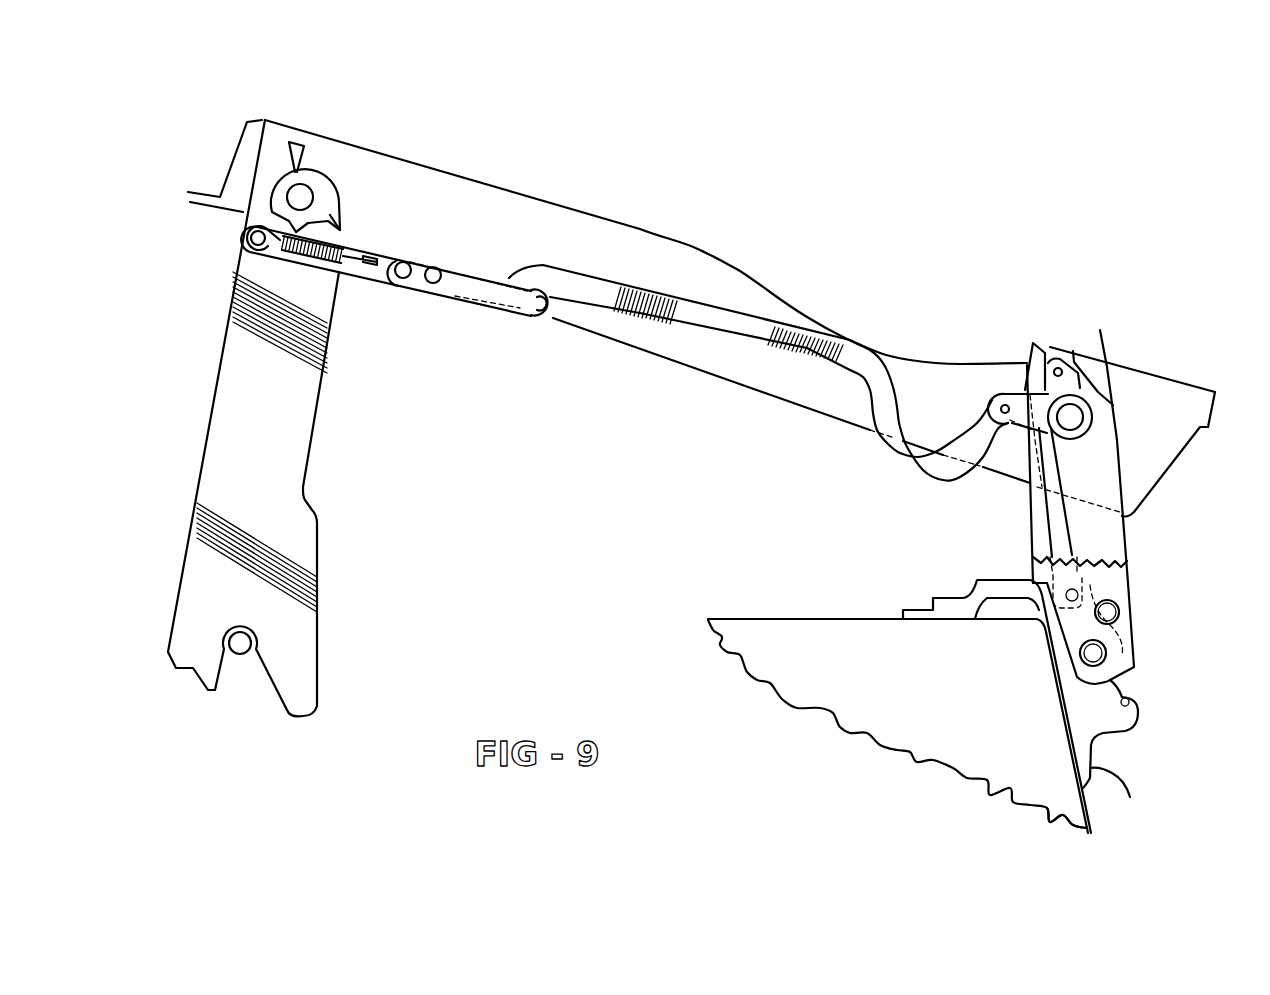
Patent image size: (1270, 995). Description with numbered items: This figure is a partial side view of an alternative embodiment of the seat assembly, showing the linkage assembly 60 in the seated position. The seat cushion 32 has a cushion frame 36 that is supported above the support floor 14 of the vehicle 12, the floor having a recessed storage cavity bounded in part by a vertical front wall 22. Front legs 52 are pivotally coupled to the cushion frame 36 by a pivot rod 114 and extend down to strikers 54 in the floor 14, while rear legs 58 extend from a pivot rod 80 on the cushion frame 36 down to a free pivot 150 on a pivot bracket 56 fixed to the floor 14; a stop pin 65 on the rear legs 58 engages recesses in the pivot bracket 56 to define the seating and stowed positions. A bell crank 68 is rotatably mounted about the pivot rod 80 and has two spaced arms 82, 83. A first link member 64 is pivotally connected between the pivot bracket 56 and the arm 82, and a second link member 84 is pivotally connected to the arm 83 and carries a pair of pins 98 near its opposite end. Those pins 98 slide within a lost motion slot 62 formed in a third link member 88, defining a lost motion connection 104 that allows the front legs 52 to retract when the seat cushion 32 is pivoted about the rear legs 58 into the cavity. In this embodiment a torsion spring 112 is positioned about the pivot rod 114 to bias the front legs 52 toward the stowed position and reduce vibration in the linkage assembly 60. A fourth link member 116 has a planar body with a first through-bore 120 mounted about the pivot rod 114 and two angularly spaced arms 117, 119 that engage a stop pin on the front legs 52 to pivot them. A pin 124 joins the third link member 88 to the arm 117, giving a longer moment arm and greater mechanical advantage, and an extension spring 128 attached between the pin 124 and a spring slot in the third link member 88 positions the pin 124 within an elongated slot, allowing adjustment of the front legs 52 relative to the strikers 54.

The vehicle 12 is at (850, 683).
The support floor 14 is at (765, 619).
The vertical front wall 22 is at (1090, 820).
The seat cushion 32 is at (813, 224).
The cushion frame 36 is at (627, 226).
The front legs 52 is at (208, 440).
The strikers 54 is at (240, 656).
The pivot brackets 56 is at (1097, 772).
The rear legs 58 is at (1127, 520).
The linkage assembly 60 is at (752, 442).
The lost motion slot 62 is at (539, 320).
The first link member 64 is at (1035, 488).
The stop pin 65 is at (1119, 610).
The bell crank 68 is at (1100, 355).
The pivot rod 80 is at (1075, 418).
The arm 82 is at (1047, 345).
The arm 83 is at (1010, 393).
The second link member 84 is at (693, 299).
The third link member 88 is at (361, 284).
The pins 98 is at (434, 267).
The lost motion connection 104 is at (470, 330).
The torsion spring 112 is at (287, 140).
The pivot rod 114 is at (300, 195).
The fourth link member 116 is at (322, 172).
The arm 117 is at (252, 230).
The arm 119 is at (322, 218).
The first through-bore 120 is at (285, 196).
The pin 124 is at (256, 240).
The extension spring 128 is at (306, 257).
The free pivot 150 is at (1090, 655).